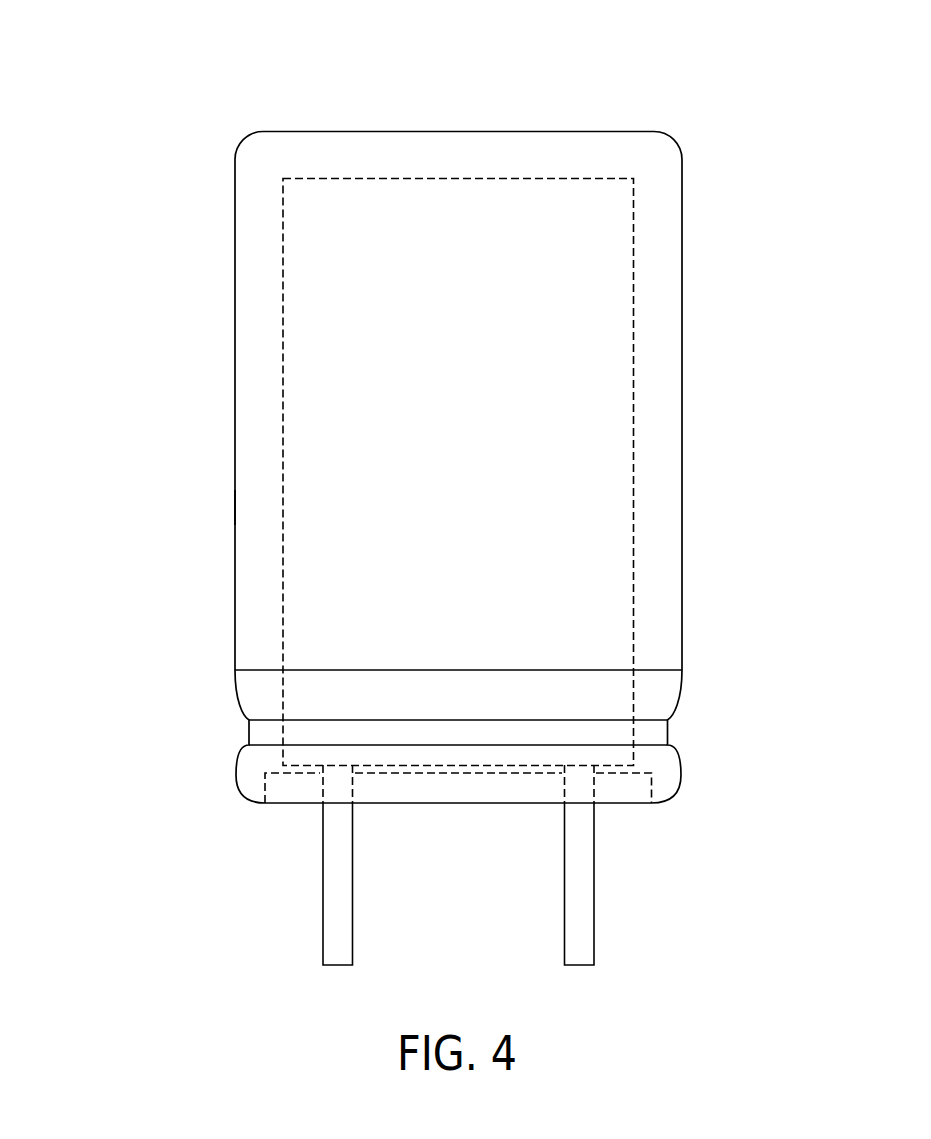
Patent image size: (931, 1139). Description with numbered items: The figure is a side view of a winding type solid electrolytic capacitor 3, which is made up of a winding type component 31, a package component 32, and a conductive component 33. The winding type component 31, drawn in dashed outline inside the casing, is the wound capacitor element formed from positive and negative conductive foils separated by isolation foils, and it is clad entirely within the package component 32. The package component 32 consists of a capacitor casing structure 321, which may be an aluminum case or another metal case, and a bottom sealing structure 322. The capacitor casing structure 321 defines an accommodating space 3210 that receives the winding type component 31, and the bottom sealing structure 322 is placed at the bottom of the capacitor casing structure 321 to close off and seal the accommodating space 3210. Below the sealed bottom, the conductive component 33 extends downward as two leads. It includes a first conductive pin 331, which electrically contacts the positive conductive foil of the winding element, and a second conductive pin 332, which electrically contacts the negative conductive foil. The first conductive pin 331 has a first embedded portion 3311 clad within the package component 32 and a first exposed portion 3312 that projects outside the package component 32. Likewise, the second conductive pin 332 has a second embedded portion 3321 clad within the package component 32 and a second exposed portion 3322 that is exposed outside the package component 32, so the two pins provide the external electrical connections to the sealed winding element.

The winding type solid electrolytic capacitor 3 is at (248, 46).
The winding type component 31 is at (623, 455).
The package component 32 is at (127, 652).
The capacitor casing structure 321 is at (257, 643).
The accommodating space 3210 is at (292, 496).
The bottom sealing structure 322 is at (278, 797).
The conductive component 33 is at (327, 933).
The first conductive pin 331 is at (188, 815).
The first embedded portion 3311 is at (340, 782).
The first exposed portion 3312 is at (340, 897).
The second conductive pin 332 is at (732, 815).
The second embedded portion 3321 is at (578, 782).
The second exposed portion 3322 is at (578, 897).